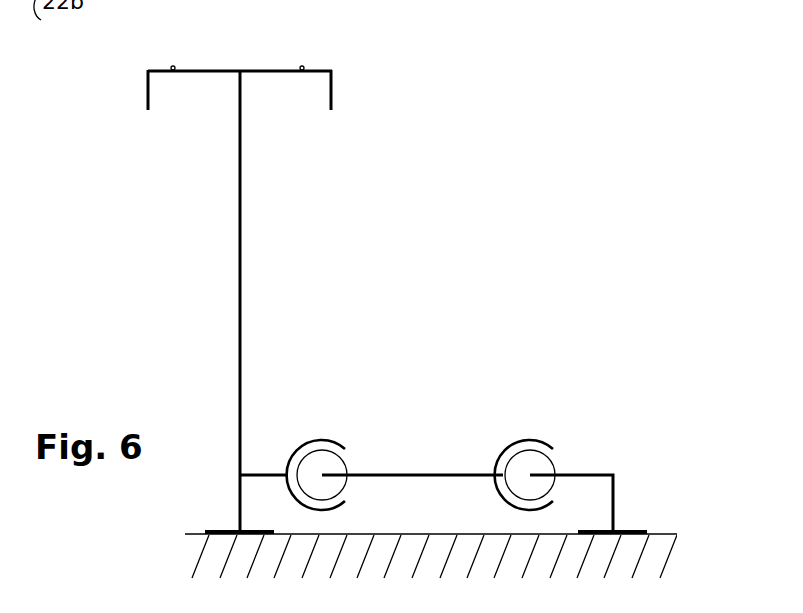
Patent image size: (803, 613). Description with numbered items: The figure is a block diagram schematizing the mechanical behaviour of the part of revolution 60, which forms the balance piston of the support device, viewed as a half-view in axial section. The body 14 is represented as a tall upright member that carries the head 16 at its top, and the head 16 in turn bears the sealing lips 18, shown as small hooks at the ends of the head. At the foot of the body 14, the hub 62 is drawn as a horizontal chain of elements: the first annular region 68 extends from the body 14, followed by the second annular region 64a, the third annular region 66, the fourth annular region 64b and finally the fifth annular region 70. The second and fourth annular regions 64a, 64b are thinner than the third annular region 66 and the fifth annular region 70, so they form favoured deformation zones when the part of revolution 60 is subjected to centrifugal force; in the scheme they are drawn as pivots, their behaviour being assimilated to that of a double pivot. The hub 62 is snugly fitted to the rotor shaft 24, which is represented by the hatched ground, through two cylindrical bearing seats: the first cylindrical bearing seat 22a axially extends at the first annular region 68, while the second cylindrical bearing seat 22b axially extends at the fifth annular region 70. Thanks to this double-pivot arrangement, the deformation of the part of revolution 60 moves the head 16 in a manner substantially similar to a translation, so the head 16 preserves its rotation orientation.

The body 14 is at (238, 242).
The head 16 is at (332, 83).
The sealing lips 18 is at (173, 67).
The first cylindrical bearing seat 22a is at (220, 537).
The second cylindrical bearing seat 22b is at (653, 550).
The rotor shaft 24 is at (230, 555).
The part of revolution 60 is at (288, 258).
The hub 62 is at (598, 466).
The second annular region 64a is at (320, 462).
The fourth annular region 64b is at (530, 460).
The third annular region 66 is at (398, 473).
The first annular region 68 is at (258, 473).
The fifth annular region 70 is at (587, 473).